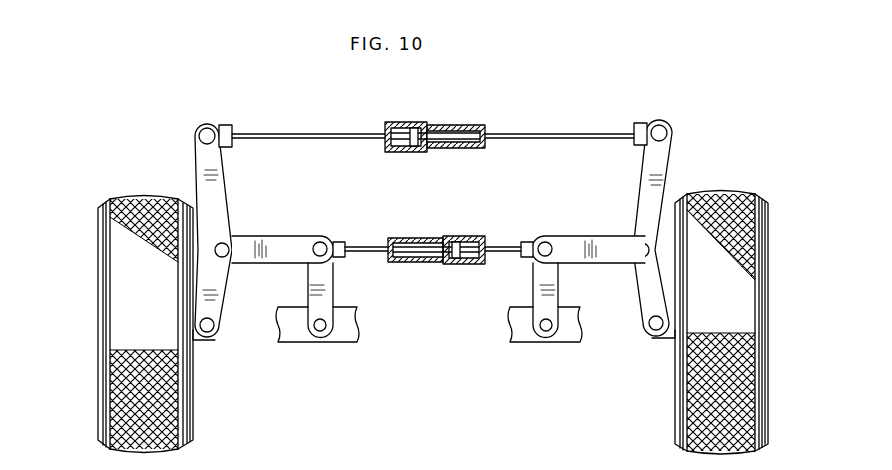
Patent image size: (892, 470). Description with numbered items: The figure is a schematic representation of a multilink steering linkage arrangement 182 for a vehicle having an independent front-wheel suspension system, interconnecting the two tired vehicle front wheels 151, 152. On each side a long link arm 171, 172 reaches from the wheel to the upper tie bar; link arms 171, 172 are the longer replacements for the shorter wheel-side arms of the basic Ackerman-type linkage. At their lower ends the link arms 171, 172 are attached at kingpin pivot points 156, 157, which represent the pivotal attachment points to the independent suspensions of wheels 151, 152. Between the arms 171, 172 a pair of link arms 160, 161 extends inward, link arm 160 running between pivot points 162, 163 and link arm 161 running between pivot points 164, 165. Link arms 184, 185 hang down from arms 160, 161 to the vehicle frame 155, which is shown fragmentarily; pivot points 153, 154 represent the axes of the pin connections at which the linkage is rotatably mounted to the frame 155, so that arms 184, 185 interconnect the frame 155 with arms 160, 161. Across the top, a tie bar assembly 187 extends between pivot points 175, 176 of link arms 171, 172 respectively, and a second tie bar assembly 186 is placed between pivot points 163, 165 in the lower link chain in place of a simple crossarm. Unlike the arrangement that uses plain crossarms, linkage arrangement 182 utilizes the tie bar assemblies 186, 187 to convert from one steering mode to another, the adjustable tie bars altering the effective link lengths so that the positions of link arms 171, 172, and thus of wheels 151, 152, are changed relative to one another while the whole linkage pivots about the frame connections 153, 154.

The tired vehicle front wheel 151 is at (120, 317).
The tired vehicle front wheel 152 is at (748, 304).
The pivot point 153 is at (320, 331).
The pivot point 154 is at (545, 332).
The vehicle frame 155 is at (350, 340).
The kingpin pivot point 156 is at (209, 335).
The kingpin pivot point 157 is at (652, 340).
The link arm 160 is at (285, 245).
The link arm 161 is at (595, 243).
The pivot point 162 is at (232, 260).
The pivot point 163 is at (332, 245).
The pivot point 164 is at (641, 258).
The pivot point 165 is at (537, 243).
The link arm 171 is at (207, 180).
The link arm 172 is at (663, 170).
The pivot point 175 is at (200, 133).
The pivot point 176 is at (665, 133).
The multilink linkage arrangement 182 is at (573, 128).
The link arm 184 is at (332, 290).
The link arm 185 is at (534, 290).
The tie bar assembly 186 is at (433, 285).
The tie bar assembly 187 is at (460, 117).